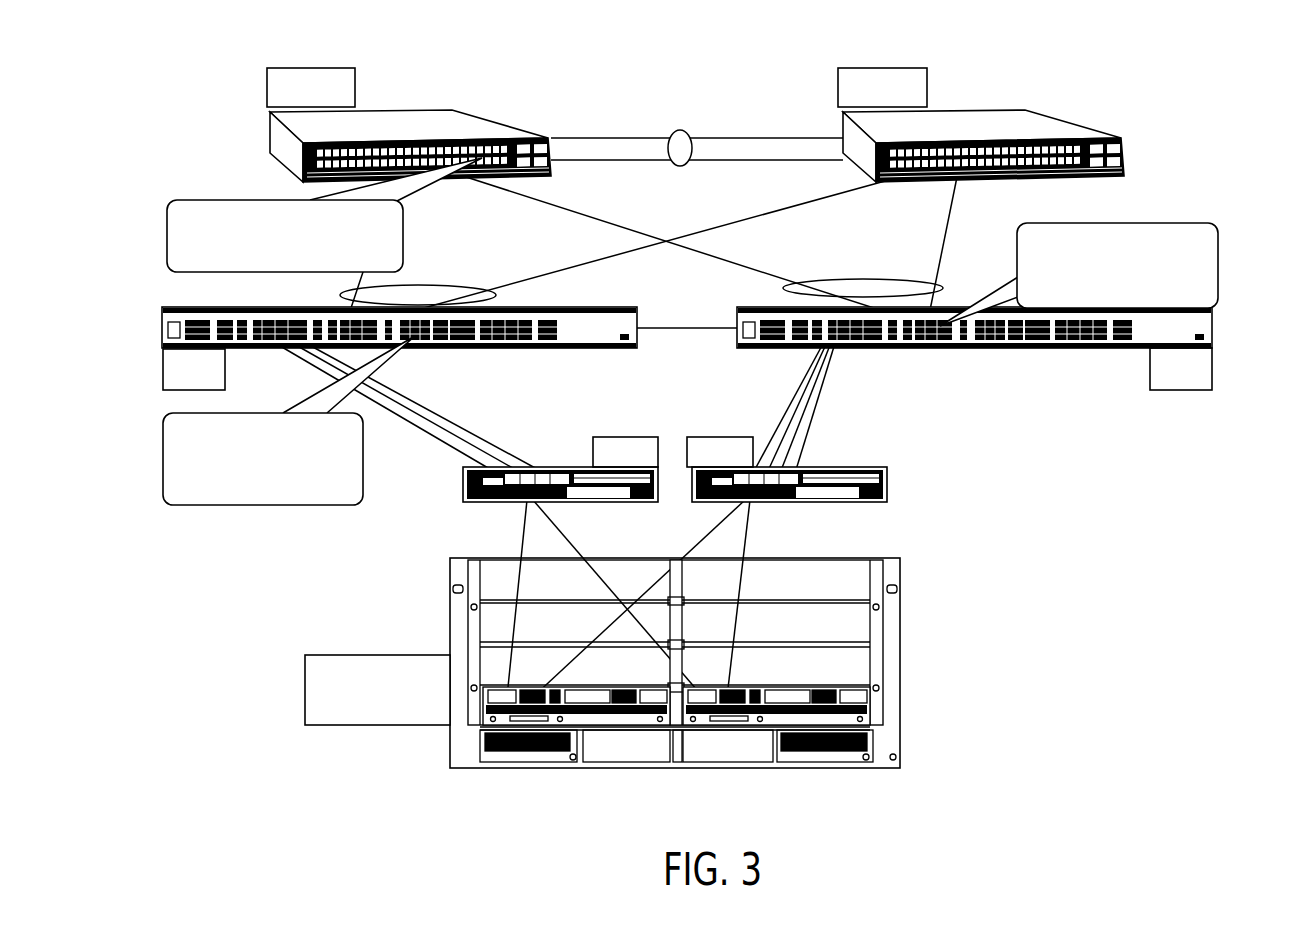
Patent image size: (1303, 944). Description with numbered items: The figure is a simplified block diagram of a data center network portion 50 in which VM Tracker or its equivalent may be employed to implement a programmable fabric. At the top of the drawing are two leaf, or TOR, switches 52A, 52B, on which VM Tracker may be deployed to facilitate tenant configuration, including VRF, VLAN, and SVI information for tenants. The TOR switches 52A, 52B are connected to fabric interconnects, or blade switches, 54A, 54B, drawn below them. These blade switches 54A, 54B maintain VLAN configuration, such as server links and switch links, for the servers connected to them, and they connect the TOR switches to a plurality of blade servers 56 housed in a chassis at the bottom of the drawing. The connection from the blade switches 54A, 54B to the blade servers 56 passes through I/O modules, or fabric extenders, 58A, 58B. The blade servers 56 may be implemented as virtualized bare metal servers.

The data center network portion 50 is at (100, 112).
The leaf switch 52A is at (473, 115).
The leaf switch 52B is at (1047, 115).
The fabric interconnect 54A is at (638, 323).
The fabric interconnect 54B is at (1213, 323).
The blade servers 56 is at (483, 727).
The I/O module 58A is at (463, 482).
The I/O module 58B is at (887, 482).